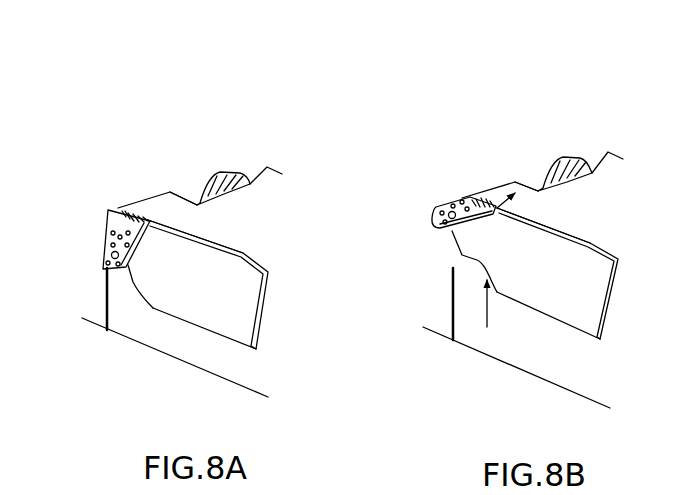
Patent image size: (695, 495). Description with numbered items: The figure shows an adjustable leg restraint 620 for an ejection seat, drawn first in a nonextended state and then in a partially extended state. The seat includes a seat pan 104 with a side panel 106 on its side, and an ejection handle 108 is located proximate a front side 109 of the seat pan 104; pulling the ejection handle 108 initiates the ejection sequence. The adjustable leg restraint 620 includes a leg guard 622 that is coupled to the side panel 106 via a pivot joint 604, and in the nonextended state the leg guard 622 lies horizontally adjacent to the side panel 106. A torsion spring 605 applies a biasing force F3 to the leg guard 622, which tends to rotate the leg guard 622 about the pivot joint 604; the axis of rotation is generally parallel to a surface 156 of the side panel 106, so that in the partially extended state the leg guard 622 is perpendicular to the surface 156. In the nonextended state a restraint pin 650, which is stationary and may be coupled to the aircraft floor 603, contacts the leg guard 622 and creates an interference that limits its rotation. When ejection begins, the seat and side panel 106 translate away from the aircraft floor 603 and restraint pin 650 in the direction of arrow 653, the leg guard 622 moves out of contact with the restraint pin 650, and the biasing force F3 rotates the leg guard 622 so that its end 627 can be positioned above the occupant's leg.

In FIG. 8A, the seat pan 104 is at (275, 224).
In FIG. 8B, the seat pan 104 is at (618, 215).
In FIG. 8A, the side panel 106 is at (212, 247).
In FIG. 8B, the side panel 106 is at (562, 238).
In FIG. 8A, the ejection handle 108 is at (230, 171).
In FIG. 8B, the ejection handle 108 is at (573, 157).
In FIG. 8A, the front side 109 is at (170, 192).
In FIG. 8B, the front side 109 is at (515, 182).
In FIG. 8A, the surface 156 is at (187, 279).
In FIG. 8B, the surface 156 is at (535, 265).
In FIG. 8A, the aircraft floor 603 is at (258, 394).
In FIG. 8B, the aircraft floor 603 is at (592, 398).
In FIG. 8A, the pivot joint 604 is at (147, 218).
In FIG. 8B, the pivot joint 604 is at (490, 202).
In FIG. 8A, the torsion spring 605 is at (117, 207).
In FIG. 8B, the torsion spring 605 is at (489, 221).
In FIG. 8A, the adjustable leg restraint 620 is at (91, 239).
In FIG. 8B, the adjustable leg restraint 620 is at (448, 209).
In FIG. 8A, the leg guard 622 is at (106, 242).
In FIG. 8B, the leg guard 622 is at (441, 199).
In FIG. 8A, the end 627 is at (122, 269).
In FIG. 8B, the end 627 is at (437, 224).
In FIG. 8A, the restraint pin 650 is at (107, 302).
In FIG. 8B, the restraint pin 650 is at (452, 302).
In FIG. 8B, the arrow 653 is at (486, 313).
In FIG. 8B, the biasing force F3 is at (503, 220).